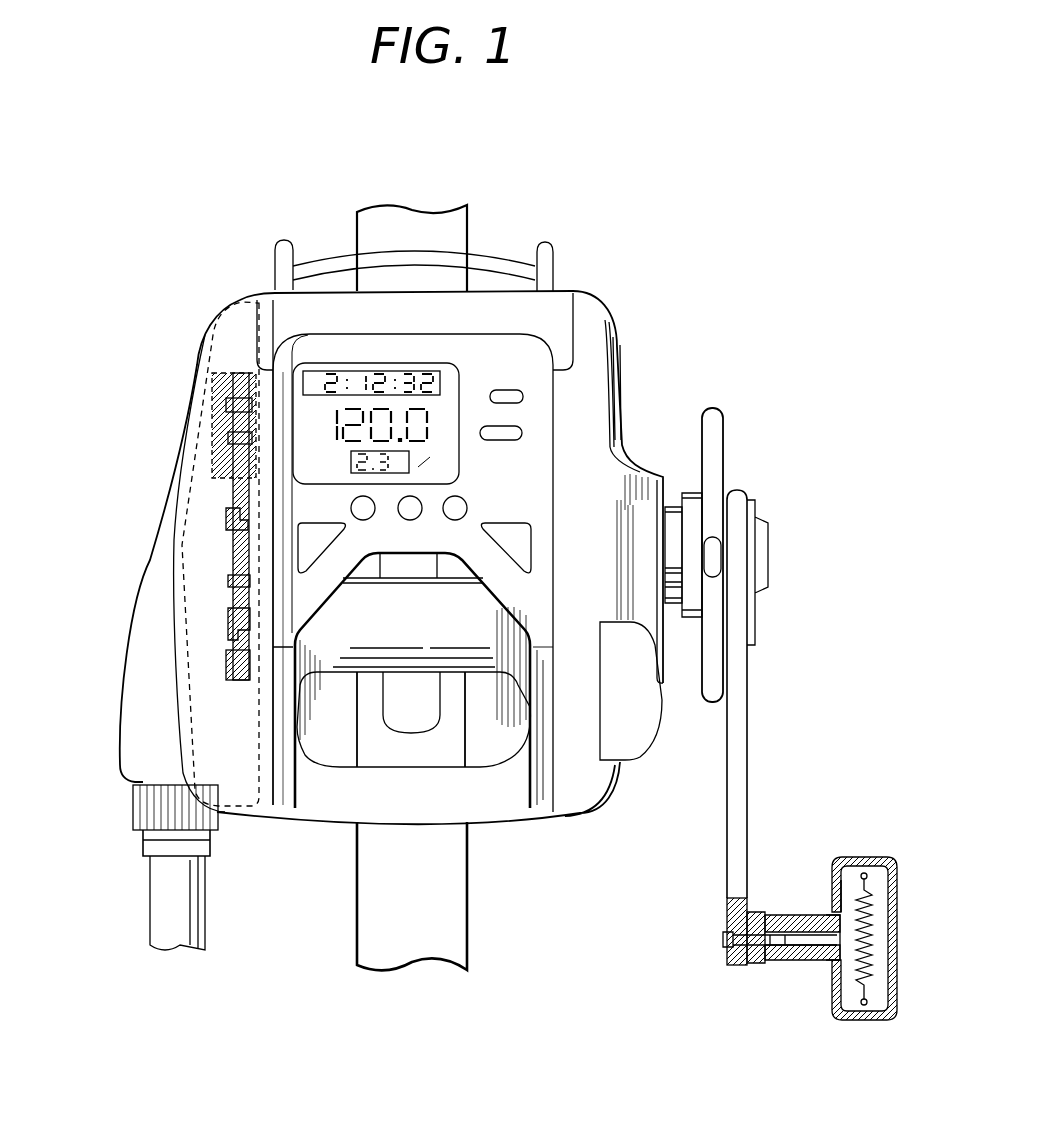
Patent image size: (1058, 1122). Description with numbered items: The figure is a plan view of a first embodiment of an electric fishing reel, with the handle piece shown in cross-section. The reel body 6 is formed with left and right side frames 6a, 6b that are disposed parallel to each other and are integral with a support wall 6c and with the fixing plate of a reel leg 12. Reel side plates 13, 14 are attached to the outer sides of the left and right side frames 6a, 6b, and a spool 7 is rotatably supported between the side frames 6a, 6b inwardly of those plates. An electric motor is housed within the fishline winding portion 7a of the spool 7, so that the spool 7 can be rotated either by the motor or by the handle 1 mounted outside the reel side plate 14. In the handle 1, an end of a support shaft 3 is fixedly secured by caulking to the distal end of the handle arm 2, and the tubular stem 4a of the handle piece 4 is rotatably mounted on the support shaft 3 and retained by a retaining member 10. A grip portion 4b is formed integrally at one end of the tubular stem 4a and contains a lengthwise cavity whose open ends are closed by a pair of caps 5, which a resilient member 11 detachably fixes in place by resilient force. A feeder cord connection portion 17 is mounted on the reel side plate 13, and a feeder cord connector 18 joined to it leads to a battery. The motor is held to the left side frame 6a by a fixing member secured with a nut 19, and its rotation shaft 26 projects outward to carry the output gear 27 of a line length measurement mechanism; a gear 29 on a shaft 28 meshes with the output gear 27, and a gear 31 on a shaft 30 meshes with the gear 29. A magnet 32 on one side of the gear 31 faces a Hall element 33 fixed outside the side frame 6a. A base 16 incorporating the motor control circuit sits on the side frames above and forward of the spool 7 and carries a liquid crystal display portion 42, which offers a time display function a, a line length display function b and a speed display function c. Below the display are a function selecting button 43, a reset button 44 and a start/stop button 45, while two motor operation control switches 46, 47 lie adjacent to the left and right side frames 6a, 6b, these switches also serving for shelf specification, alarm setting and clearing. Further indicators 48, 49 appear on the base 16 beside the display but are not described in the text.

The handle 1 is at (823, 798).
The handle arm 2 is at (740, 762).
The support shaft 3 is at (720, 938).
The handle piece 4 is at (805, 958).
The tubular stem 4a is at (772, 962).
The grip portion 4b is at (834, 990).
The caps 5 is at (870, 855).
The reel body 6 is at (604, 290).
The left side frame 6a is at (283, 800).
The right side frame 6b is at (540, 814).
The support wall 6c is at (512, 816).
The spool 7 is at (340, 675).
The fishline winding portion 7a is at (405, 665).
The retaining member 10 is at (843, 905).
The resilient member 11 is at (870, 965).
The reel leg 12 is at (440, 717).
The reel side plate 13 is at (248, 393).
The reel side plate 14 is at (604, 327).
The base 16 is at (537, 337).
The feeder cord connection portion 17 is at (143, 783).
The feeder cord connector 18 is at (215, 826).
The nut 19 is at (235, 660).
The rotation shaft 26 is at (232, 615).
The output gear 27 is at (233, 583).
The shaft 28 is at (227, 517).
The gear 29 is at (235, 440).
The shaft 30 is at (284, 400).
The gear 31 is at (236, 420).
The magnet 32 is at (243, 407).
The Hall element 33 is at (252, 403).
The liquid crystal display portion 42 is at (422, 312).
The time display function a is at (441, 382).
The line length display function b is at (444, 418).
The speed display function c is at (449, 455).
The function selecting button 43 is at (365, 521).
The reset button 44 is at (411, 521).
The start/stop button 45 is at (467, 500).
The motor operation control switch 46 is at (322, 551).
The motor operation control switch 47 is at (524, 528).
The indicator lamp 48 is at (525, 395).
The indicator lamp 49 is at (522, 432).